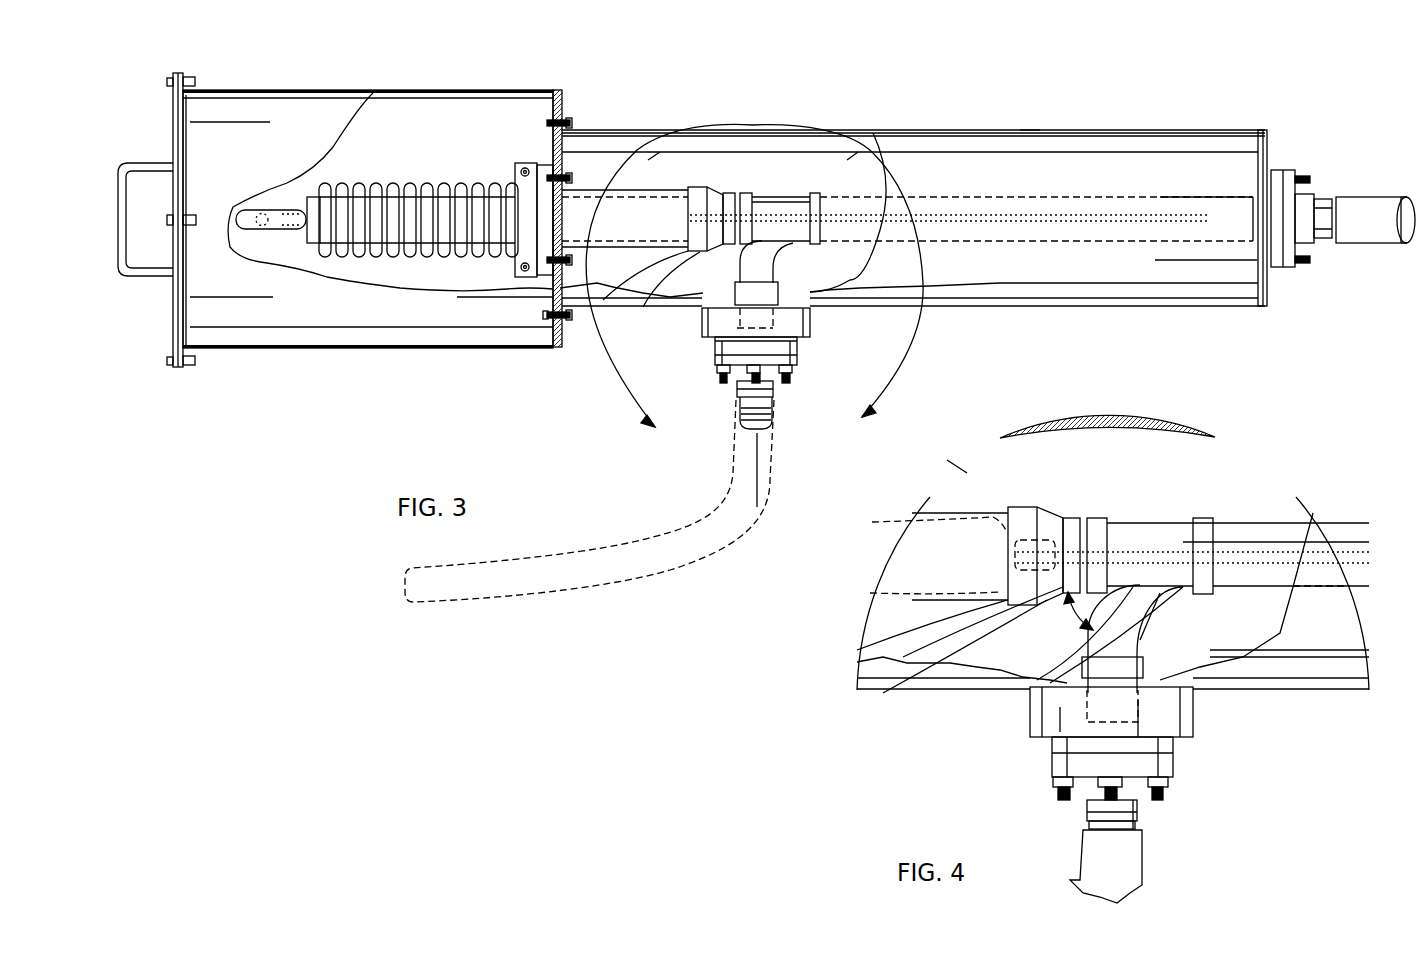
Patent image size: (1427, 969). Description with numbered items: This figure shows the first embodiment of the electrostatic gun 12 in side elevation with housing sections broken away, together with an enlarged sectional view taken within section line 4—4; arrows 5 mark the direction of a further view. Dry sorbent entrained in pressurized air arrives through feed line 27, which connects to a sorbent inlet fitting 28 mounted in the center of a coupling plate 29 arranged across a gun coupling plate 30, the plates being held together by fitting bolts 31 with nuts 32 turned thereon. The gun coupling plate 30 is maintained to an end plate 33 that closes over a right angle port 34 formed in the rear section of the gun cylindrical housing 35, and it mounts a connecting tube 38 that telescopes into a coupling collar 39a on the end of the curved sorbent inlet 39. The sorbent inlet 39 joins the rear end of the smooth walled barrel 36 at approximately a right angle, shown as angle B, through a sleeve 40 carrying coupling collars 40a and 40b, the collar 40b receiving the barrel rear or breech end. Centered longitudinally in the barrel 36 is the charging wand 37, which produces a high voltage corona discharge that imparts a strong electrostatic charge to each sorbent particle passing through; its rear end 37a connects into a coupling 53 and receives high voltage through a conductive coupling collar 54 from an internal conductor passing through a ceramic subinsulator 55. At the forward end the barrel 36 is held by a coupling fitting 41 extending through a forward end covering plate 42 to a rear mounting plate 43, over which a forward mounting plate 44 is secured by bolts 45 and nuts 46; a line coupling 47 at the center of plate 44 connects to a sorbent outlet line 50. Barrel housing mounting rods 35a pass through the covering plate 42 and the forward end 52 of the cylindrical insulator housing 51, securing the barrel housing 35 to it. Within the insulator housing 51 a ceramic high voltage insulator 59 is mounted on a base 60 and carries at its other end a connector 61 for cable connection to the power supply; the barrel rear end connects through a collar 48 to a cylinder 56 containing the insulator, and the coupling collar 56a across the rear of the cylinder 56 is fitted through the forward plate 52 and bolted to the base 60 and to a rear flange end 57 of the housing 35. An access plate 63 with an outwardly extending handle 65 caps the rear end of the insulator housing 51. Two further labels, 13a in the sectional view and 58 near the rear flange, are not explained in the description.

In FIG. 3, the electrostatic gun 12 is at (627, 113).
In FIG. 4, the conductor section 13a is at (1127, 523).
In FIG. 3, the feed line 27 is at (548, 572).
In FIG. 4, the feed line 27 is at (1100, 838).
In FIG. 3, the sorbent inlet fitting 28 is at (774, 400).
In FIG. 4, the sorbent inlet fitting 28 is at (1137, 815).
In FIG. 3, the coupling plate 29 is at (776, 392).
In FIG. 4, the coupling plate 29 is at (1172, 768).
In FIG. 3, the gun coupling plate 30 is at (735, 380).
In FIG. 4, the gun coupling plate 30 is at (1060, 777).
In FIG. 3, the fitting bolts 31 is at (790, 400).
In FIG. 4, the fitting bolts 31 is at (1063, 800).
In FIG. 3, the nuts 32 is at (797, 383).
In FIG. 4, the nuts 32 is at (1058, 790).
In FIG. 3, the end plate 33 is at (714, 340).
In FIG. 4, the end plate 33 is at (1052, 750).
In FIG. 3, the right angle port 34 is at (813, 330).
In FIG. 4, the right angle port 34 is at (1193, 705).
In FIG. 3, the gun cylindrical housing 35 is at (1030, 307).
In FIG. 4, the gun cylindrical housing 35 is at (897, 690).
In FIG. 3, the barrel housing mounting rods 35a is at (1030, 130).
In FIG. 4, the barrel housing mounting rods 35a is at (1093, 423).
In FIG. 3, the barrel 36 is at (1167, 197).
In FIG. 4, the barrel 36 is at (1237, 542).
In FIG. 3, the charging wand 37 is at (1050, 213).
In FIG. 4, the charging wand 37 is at (1275, 560).
In FIG. 3, the rear end of wand 37a is at (728, 233).
In FIG. 4, the rear end of wand 37a is at (857, 663).
In FIG. 3, the connecting tube 38 is at (797, 340).
In FIG. 4, the connecting tube 38 is at (1140, 710).
In FIG. 3, the sorbent inlet 39 is at (740, 275).
In FIG. 4, the sorbent inlet 39 is at (1088, 672).
In FIG. 3, the coupling collar 39a is at (803, 303).
In FIG. 4, the coupling collar 39a is at (1068, 705).
In FIG. 3, the sleeve 40 is at (840, 196).
In FIG. 4, the sleeve 40 is at (1260, 545).
In FIG. 3, the coupling collar 40a is at (830, 237).
In FIG. 4, the coupling collar 40a is at (858, 683).
In FIG. 3, the coupling collar 40b is at (820, 196).
In FIG. 4, the coupling collar 40b is at (1213, 520).
In FIG. 3, the coupling fitting 41 is at (1278, 170).
In FIG. 3, the barrel forward end covering plate 42 is at (1270, 288).
In FIG. 3, the rear mounting plate 43 is at (757, 505).
In FIG. 3, the forward mounting plate 44 is at (1300, 176).
In FIG. 3, the bolts 45 is at (1322, 199).
In FIG. 3, the nuts 46 is at (1305, 194).
In FIG. 3, the line coupling 47 is at (1340, 197).
In FIG. 3, the collar 48 is at (703, 251).
In FIG. 4, the collar 48 is at (857, 650).
In FIG. 3, the sorbent outlet line 50 is at (1390, 222).
In FIG. 3, the insulator housing 51 is at (400, 88).
In FIG. 3, the forward end of insulator housing 52 is at (188, 135).
In FIG. 3, the coupling 53 is at (780, 196).
In FIG. 4, the coupling 53 is at (1037, 505).
In FIG. 3, the conductive coupling collar 54 is at (733, 192).
In FIG. 4, the conductive coupling collar 54 is at (1070, 518).
In FIG. 3, the ceramic subinsulator 55 is at (693, 245).
In FIG. 4, the ceramic subinsulator 55 is at (998, 580).
In FIG. 3, the cylinder 56 is at (568, 150).
In FIG. 4, the cylinder 56 is at (950, 512).
In FIG. 3, the mounting plate 56a is at (542, 163).
In FIG. 3, the rear flange end 57 is at (558, 120).
In FIG. 3, the bolt head 58 is at (545, 320).
In FIG. 3, the high voltage insulator 59 is at (408, 258).
In FIG. 3, the base 60 is at (522, 224).
In FIG. 3, the connector 61 is at (270, 231).
In FIG. 3, the access plate 63 is at (173, 127).
In FIG. 3, the handle 65 is at (167, 81).
In FIG. 3, the section line 4— 4 is at (754, 279).
In FIG. 3, the view arrow 5 is at (1426, 83).
In FIG. 4, the angle B is at (1110, 603).